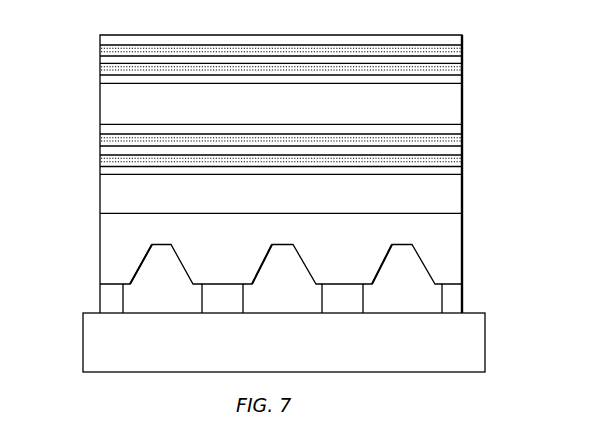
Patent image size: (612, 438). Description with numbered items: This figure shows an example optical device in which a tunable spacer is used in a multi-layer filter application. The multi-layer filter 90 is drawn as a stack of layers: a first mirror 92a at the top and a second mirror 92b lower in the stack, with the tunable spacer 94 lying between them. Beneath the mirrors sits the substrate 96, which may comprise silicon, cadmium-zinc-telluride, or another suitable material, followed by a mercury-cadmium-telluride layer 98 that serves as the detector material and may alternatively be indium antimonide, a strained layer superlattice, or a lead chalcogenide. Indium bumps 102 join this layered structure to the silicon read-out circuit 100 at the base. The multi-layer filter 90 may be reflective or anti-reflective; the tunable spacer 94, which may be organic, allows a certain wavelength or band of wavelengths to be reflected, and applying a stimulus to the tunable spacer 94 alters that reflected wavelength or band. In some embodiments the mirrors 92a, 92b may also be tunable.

The multi-layer filter 90 is at (501, 63).
The mirror 92a is at (88, 36).
The mirror 92b is at (88, 124).
The tunable spacer 94 is at (453, 100).
The substrate 96 is at (450, 192).
The mercury-cadmium-telluride layer 98 is at (453, 241).
The silicon read-out circuit 100 is at (300, 353).
The indium bumps 102 is at (112, 301).